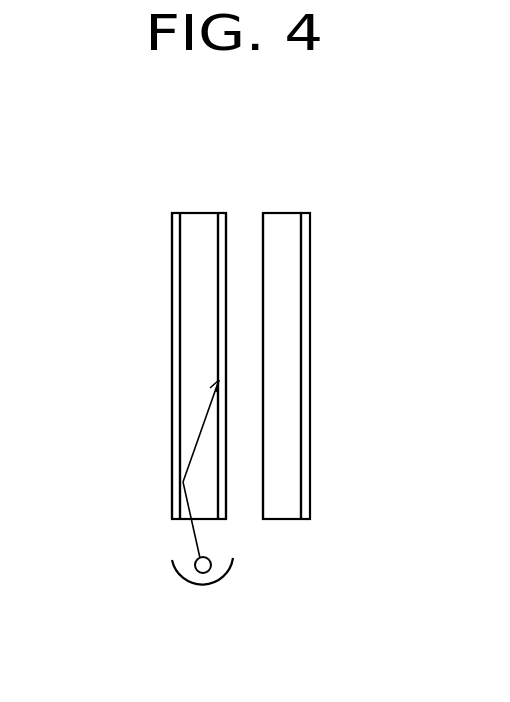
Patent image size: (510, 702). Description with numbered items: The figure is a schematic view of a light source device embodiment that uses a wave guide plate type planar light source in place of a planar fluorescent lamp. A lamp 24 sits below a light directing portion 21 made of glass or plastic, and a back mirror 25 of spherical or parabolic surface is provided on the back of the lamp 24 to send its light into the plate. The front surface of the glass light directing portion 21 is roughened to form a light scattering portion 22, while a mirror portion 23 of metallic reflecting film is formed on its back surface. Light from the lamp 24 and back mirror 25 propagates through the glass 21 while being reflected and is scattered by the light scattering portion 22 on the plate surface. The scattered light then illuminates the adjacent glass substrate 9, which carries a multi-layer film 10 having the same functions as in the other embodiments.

The light directing portion 21 is at (190, 213).
The light scattering portion 22 is at (226, 224).
The mirror portion 23 is at (172, 258).
The multi-layer film 10 is at (310, 503).
The glass substrate 9 is at (278, 519).
The lamp 24 is at (195, 561).
The back mirror 25 is at (202, 592).